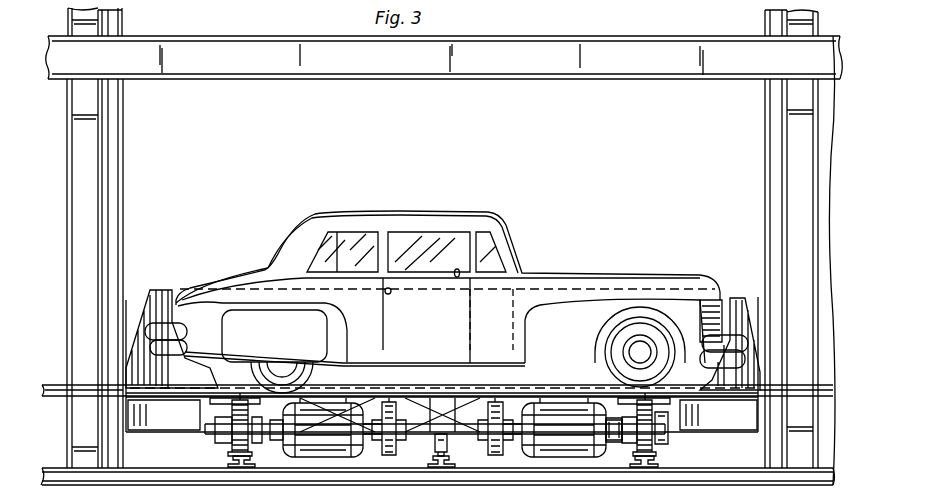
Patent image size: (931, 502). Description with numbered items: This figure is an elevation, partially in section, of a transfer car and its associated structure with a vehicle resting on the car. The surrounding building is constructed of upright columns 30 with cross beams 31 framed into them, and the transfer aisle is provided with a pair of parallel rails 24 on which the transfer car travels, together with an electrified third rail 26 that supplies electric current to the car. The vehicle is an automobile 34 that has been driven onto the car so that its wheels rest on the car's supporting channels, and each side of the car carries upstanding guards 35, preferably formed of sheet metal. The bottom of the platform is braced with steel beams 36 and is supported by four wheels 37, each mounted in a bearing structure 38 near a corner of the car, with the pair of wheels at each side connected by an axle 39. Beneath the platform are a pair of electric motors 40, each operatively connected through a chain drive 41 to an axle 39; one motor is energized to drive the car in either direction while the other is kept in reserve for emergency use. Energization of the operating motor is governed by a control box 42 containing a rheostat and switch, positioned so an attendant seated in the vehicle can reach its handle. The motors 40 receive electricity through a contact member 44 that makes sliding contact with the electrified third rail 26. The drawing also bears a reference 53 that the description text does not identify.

The parallel rails 24 is at (233, 462).
The electrified third rail 26 is at (455, 468).
The upright columns 30 is at (766, 133).
The cross beams 31 is at (617, 80).
The automobile 34 is at (556, 273).
The upstanding guards 35 is at (730, 300).
The steel beams 36 is at (746, 420).
The wheels 37 is at (228, 438).
The bearing structure 38 is at (668, 414).
The axle 39 is at (614, 442).
The electric motors 40 is at (300, 457).
The chain drive 41 is at (388, 456).
The control box 42 is at (472, 332).
The contact member 44 is at (446, 447).
The rail beam 53 is at (52, 385).